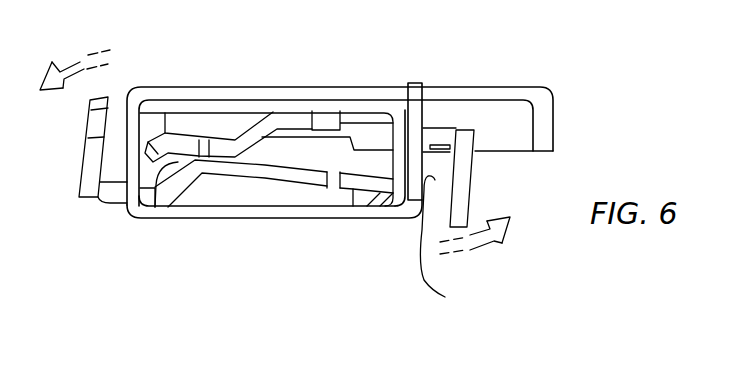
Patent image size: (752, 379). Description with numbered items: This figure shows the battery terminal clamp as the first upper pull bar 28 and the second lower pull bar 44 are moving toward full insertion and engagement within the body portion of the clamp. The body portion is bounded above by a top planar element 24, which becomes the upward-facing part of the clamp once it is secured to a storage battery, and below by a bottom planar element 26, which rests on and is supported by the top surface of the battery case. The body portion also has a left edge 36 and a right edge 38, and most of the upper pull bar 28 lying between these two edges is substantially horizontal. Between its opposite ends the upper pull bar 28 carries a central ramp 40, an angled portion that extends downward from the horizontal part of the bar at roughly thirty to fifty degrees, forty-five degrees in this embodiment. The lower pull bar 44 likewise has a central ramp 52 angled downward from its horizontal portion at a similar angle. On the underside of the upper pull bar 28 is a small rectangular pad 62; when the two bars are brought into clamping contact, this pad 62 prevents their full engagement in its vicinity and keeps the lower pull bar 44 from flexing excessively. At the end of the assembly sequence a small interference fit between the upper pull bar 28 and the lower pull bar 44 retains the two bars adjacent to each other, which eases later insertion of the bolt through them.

The top planar element 24 is at (254, 84).
The bottom planar element 26 is at (307, 217).
The upper pull bar 28 is at (365, 118).
The left edge 36 is at (100, 163).
The right edge 38 is at (446, 260).
The central ramp 40 is at (250, 126).
The lower pull bar 44 is at (253, 187).
The central ramp 52 is at (154, 207).
The rectangular pad 62 is at (437, 150).